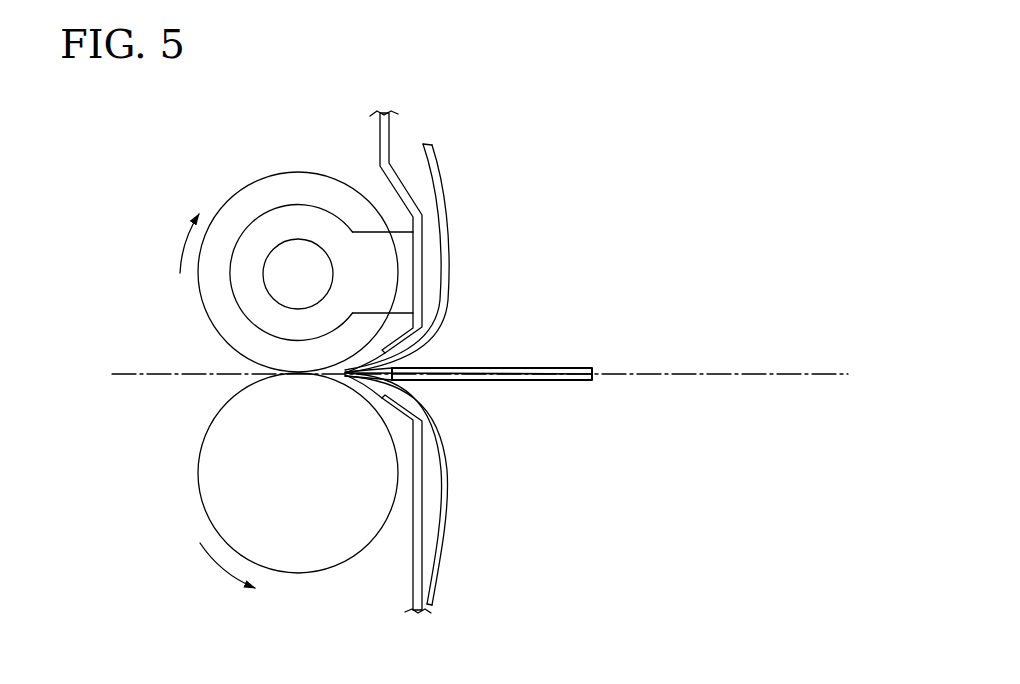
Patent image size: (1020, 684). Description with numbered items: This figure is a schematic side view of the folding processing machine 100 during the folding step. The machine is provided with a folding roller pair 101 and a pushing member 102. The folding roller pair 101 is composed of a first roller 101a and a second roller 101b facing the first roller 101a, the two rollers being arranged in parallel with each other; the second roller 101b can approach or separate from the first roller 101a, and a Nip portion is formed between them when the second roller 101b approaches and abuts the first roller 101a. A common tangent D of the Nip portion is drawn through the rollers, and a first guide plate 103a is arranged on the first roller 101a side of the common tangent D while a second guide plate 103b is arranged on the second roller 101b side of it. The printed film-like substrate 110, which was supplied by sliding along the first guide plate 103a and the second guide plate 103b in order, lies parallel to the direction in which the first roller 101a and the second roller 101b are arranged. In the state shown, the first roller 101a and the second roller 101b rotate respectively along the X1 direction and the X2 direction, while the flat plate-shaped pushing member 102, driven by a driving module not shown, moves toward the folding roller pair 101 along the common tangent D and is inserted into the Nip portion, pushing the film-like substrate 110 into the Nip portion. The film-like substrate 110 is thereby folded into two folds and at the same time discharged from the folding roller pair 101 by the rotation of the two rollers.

The folding processing machine 100 is at (603, 219).
The folding roller pair 101 is at (75, 413).
The first roller 101a is at (210, 525).
The second roller 101b is at (208, 317).
The pushing member 102 is at (537, 348).
The first guide plate 103a is at (412, 548).
The second guide plate 103b is at (390, 182).
The film-like substrate 110 is at (445, 190).
The common tangent D is at (767, 377).
The X1 direction X1 is at (174, 243).
The X2 direction X2 is at (220, 571).